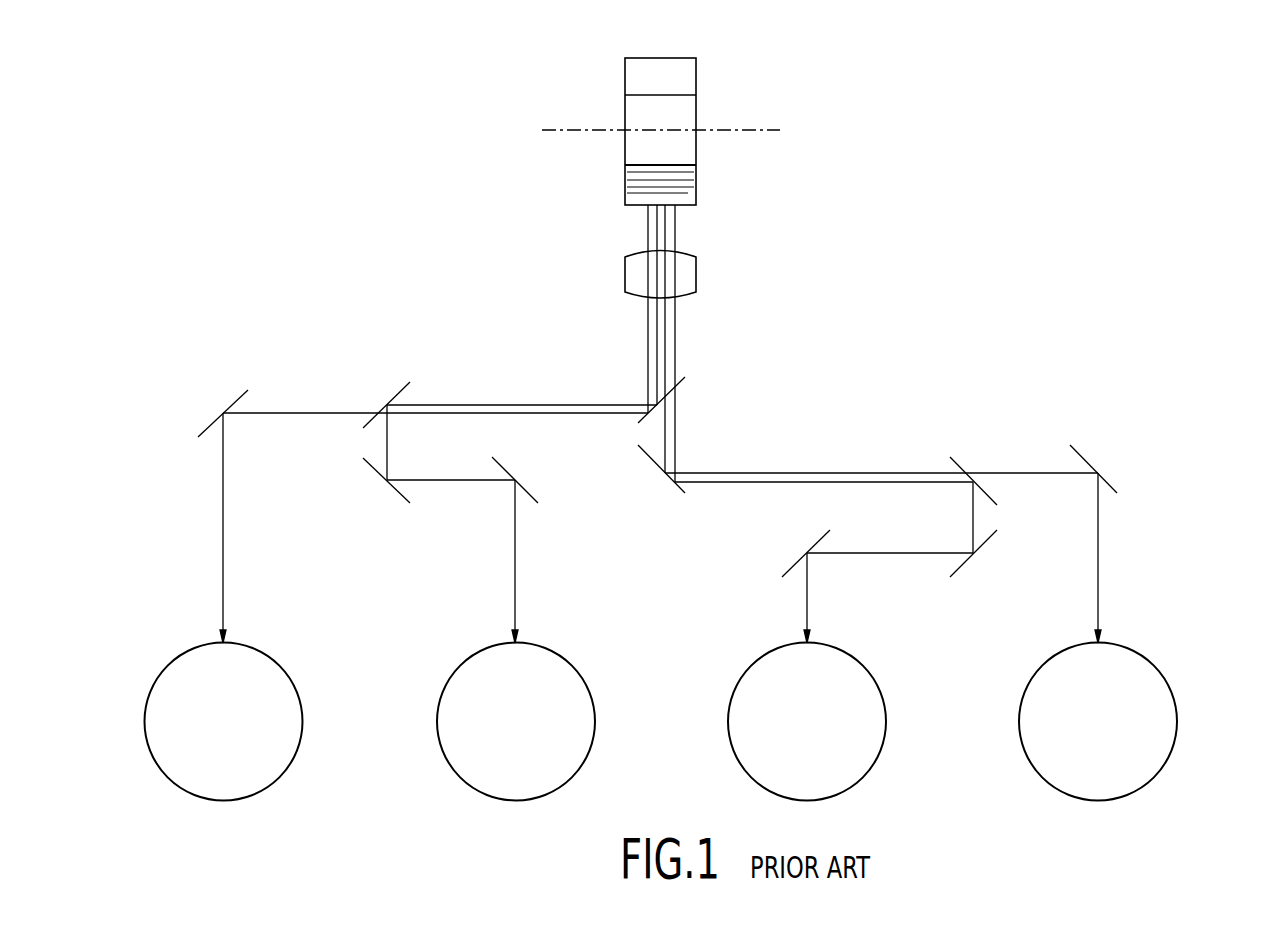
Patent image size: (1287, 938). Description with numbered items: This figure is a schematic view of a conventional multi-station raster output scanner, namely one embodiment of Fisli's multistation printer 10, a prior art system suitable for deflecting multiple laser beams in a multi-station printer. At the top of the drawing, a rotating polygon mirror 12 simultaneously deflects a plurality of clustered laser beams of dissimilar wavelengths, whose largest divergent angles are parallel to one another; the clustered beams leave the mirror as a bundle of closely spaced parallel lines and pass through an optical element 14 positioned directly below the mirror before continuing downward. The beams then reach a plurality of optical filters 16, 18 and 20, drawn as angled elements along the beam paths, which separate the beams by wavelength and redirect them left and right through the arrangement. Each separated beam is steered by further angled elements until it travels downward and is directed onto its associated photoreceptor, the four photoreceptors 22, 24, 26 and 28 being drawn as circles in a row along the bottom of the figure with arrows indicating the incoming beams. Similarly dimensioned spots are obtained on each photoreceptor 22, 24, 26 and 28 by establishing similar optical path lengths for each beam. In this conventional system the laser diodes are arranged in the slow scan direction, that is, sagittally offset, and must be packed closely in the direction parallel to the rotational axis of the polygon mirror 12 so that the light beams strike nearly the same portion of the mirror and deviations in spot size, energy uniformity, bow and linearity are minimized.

The multistation printer 10 is at (938, 171).
The rotating polygon mirror 12 is at (691, 66).
The lens 14 is at (687, 262).
The optical filter 16 is at (683, 379).
The optical filter 18 is at (409, 383).
The optical filter 20 is at (951, 460).
The photoreceptor 22 is at (292, 729).
The photoreceptor 24 is at (584, 729).
The photoreceptor 26 is at (875, 729).
The photoreceptor 28 is at (1166, 729).